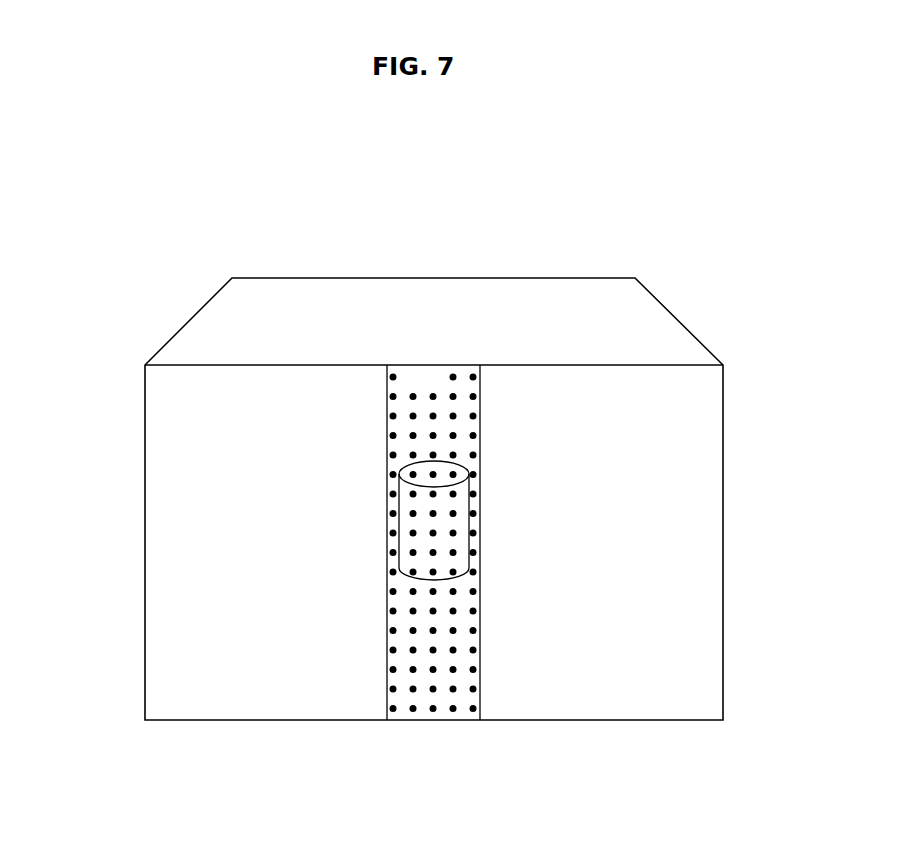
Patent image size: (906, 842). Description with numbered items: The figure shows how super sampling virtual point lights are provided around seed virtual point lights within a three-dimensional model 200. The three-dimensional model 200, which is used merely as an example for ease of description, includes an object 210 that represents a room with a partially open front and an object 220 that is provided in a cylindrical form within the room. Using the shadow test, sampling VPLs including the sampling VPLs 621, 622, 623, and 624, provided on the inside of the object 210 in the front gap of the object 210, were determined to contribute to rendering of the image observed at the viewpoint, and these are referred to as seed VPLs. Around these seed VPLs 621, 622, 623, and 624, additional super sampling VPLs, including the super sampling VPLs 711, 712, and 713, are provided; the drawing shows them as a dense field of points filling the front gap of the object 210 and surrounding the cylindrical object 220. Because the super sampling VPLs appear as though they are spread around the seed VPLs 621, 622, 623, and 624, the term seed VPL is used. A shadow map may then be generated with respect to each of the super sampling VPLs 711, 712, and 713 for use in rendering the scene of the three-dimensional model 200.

The 3D model 200 is at (165, 171).
The object 210 is at (157, 478).
The object 220 is at (465, 560).
The super sampling VPL 711 is at (413, 397).
The super sampling VPL 712 is at (413, 533).
The super sampling VPL 713 is at (413, 630).
The seed VPL 621 is at (433, 397).
The seed VPL 622 is at (433, 475).
The seed VPL 623 is at (433, 553).
The seed VPL 624 is at (435, 632).